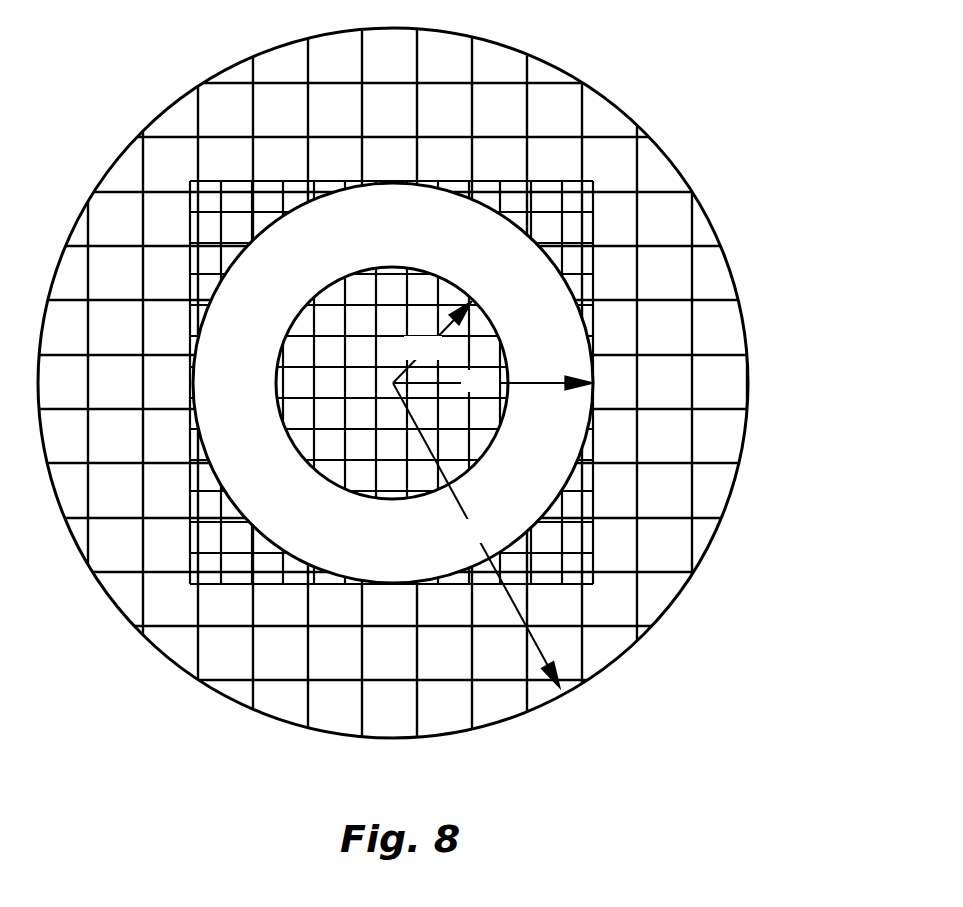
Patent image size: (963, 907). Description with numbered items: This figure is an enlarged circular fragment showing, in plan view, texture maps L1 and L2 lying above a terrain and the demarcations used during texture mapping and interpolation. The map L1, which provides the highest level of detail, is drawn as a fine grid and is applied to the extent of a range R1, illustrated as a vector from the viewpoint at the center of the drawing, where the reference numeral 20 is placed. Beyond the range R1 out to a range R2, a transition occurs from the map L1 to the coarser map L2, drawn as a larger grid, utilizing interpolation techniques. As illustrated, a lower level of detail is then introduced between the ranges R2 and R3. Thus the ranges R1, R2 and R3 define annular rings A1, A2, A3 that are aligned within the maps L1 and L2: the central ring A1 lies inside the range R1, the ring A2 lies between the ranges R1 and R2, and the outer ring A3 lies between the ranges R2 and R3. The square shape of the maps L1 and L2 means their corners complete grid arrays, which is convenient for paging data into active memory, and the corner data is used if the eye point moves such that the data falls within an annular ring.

The optical element (lens) with grid pattern 20 is at (393, 384).
The texture map L1 is at (547, 181).
The texture map L2 is at (723, 442).
The annular ring A1 is at (497, 320).
The annular ring A2 is at (588, 372).
The annular ring A3 is at (733, 278).
The range R1 is at (432, 342).
The range R2 is at (493, 382).
The range R3 is at (476, 535).